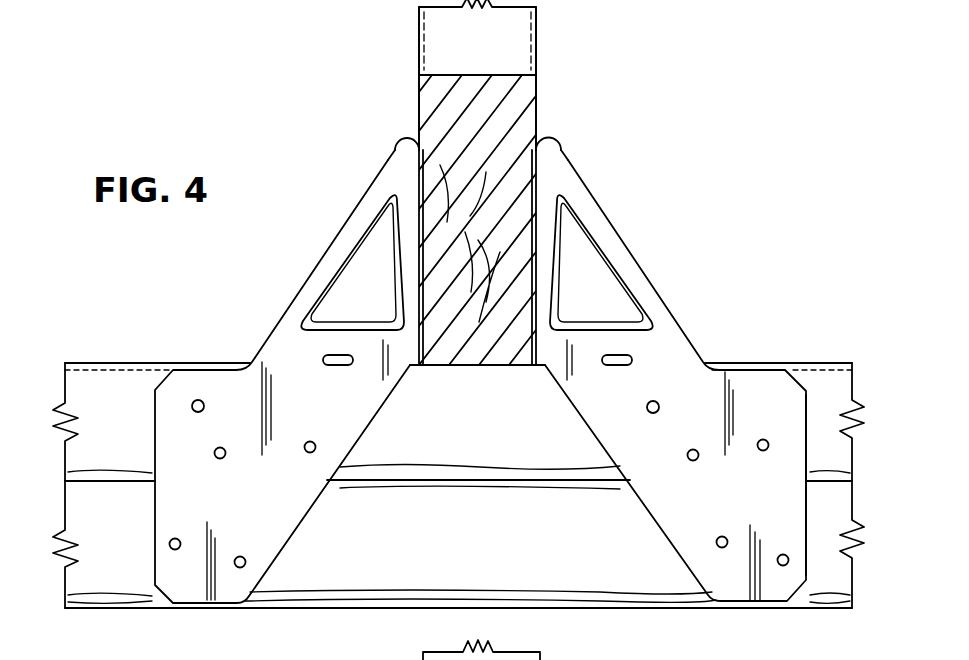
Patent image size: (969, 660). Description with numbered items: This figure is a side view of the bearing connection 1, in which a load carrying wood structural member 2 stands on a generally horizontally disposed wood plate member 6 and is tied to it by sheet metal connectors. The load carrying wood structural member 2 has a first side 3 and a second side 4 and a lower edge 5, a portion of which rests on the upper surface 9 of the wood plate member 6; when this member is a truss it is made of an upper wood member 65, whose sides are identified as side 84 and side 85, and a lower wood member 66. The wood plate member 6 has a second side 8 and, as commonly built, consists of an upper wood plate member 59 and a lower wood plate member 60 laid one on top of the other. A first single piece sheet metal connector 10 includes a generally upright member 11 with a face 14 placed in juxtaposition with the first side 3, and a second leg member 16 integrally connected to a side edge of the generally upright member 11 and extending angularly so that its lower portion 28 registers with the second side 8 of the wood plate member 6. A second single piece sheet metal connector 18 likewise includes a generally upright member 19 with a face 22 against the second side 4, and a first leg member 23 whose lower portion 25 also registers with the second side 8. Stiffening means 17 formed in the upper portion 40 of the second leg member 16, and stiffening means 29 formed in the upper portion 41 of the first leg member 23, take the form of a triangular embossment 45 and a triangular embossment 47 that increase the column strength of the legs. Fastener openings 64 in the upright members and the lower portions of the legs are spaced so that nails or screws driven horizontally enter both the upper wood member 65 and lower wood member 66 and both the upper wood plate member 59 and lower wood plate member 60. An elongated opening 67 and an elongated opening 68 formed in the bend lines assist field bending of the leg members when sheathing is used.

The bearing connection 1 is at (513, 344).
The load carrying wood structural member 2 is at (485, 182).
The first side 3 is at (419, 80).
The second side 4 is at (537, 85).
The lower edge 5 is at (477, 366).
The wood plate member 6 is at (797, 362).
The second side 8 is at (458, 461).
The upper surface 9 is at (765, 363).
The first single piece sheet metal connector 10 is at (320, 263).
The generally upright member 11 is at (426, 150).
The face 14 is at (414, 166).
The second leg member 16 is at (288, 308).
The stiffening means 17 is at (343, 247).
The second single piece sheet metal connector 18 is at (618, 218).
The generally upright member 19 is at (534, 151).
The face 22 is at (542, 166).
The first leg member 23 is at (665, 292).
The lower portion 25 is at (797, 416).
The lower portion 28 is at (178, 502).
The stiffening means 29 is at (614, 250).
The upper portion 40 is at (393, 158).
The upper portion 41 is at (567, 158).
The triangular embossment 45 is at (372, 243).
The triangular embossment 47 is at (598, 260).
The upper wood plate member 59 is at (98, 392).
The lower wood plate member 60 is at (100, 590).
The fastener openings 64 is at (222, 459).
The upper wood member 65 is at (442, 42).
The lower wood member 66 is at (513, 100).
The elongated opening 67 is at (331, 367).
The elongated opening 68 is at (611, 366).
The side 84 is at (419, 22).
The side 85 is at (537, 25).